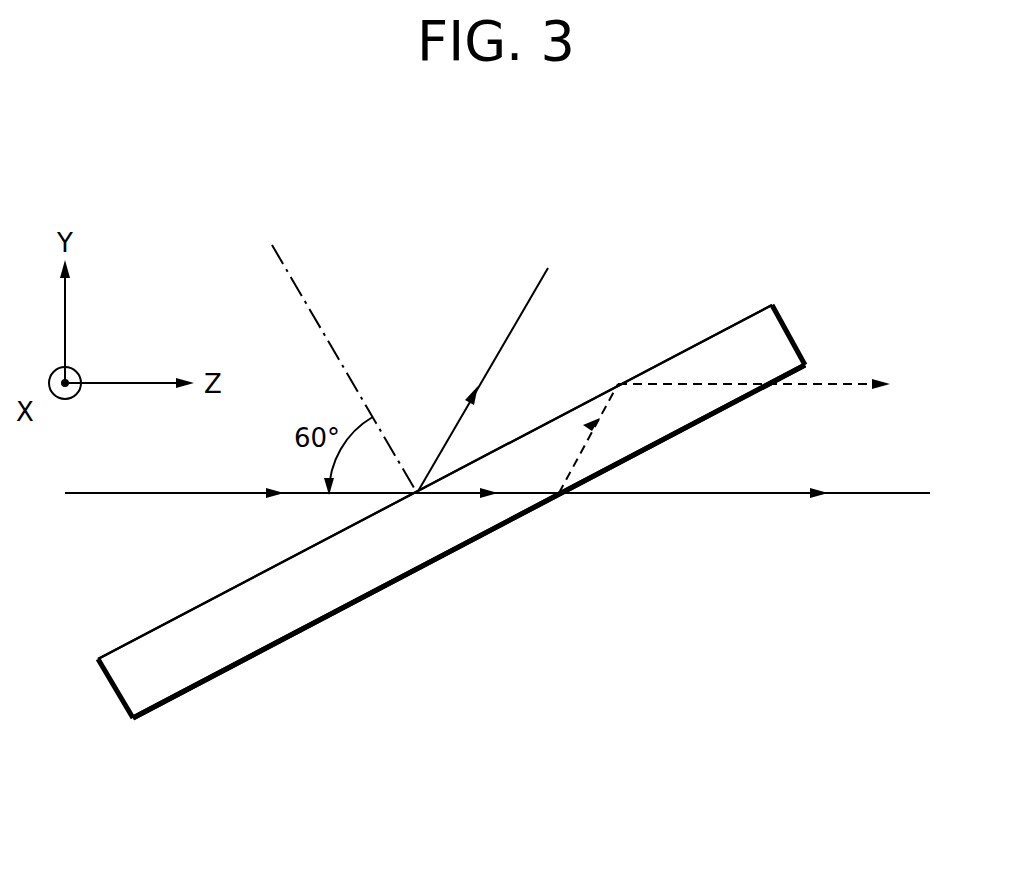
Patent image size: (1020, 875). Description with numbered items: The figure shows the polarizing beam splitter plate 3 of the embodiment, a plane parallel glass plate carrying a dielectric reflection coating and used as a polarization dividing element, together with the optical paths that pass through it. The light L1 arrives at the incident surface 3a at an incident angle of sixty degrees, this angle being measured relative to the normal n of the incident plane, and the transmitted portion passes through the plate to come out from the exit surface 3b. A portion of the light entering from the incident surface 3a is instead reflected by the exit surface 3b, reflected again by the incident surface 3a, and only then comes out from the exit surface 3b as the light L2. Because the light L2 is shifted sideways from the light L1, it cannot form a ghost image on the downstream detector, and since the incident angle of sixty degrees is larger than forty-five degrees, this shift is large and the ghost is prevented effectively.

The polarizing beam splitter plate 3 is at (718, 333).
The incident surface 3a is at (172, 618).
The exit surface 3b is at (227, 673).
The light L1 is at (690, 494).
The light L2 is at (563, 478).
The normal n is at (294, 277).